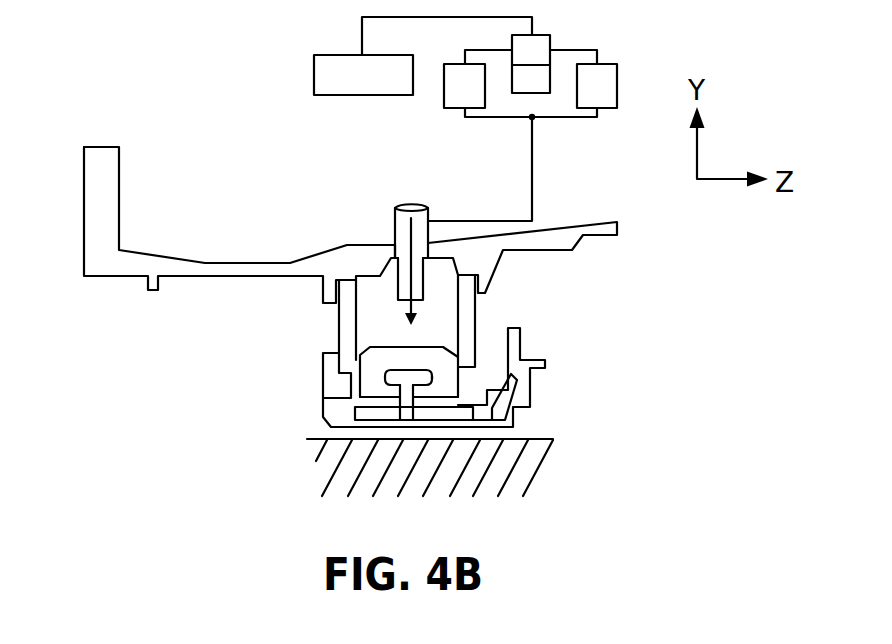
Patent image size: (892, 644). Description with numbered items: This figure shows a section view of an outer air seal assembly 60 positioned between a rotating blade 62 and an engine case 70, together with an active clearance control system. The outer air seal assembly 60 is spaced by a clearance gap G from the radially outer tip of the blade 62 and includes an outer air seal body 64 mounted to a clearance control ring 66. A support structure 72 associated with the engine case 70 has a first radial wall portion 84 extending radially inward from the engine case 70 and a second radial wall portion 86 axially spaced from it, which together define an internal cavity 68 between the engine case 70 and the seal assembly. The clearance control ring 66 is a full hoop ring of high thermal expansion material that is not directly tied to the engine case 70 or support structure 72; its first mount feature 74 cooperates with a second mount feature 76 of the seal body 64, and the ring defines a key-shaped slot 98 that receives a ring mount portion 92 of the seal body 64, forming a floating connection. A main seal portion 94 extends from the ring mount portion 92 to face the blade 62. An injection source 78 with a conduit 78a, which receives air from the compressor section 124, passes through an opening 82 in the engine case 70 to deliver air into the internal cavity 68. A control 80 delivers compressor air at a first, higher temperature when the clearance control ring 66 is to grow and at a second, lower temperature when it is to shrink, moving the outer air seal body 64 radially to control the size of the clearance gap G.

The compressor section 124 is at (423, 56).
The control 80 is at (548, 39).
The injection source 78 is at (417, 252).
The conduit 78a is at (395, 212).
The opening 82 is at (395, 243).
The engine case 70 is at (253, 263).
The second radial wall portion 86 is at (480, 279).
The outer air seal assembly 60 is at (429, 403).
The support structure 72 is at (356, 336).
The first radial wall portion 84 is at (346, 340).
The clearance control ring 66 is at (432, 436).
The first mount feature 74 is at (430, 360).
The slot 98 is at (432, 380).
The outer air seal body 64 is at (457, 379).
The internal cavity 68 is at (451, 325).
The main seal portion 94 is at (515, 422).
The clearance gap G is at (306, 428).
The blade 62 is at (335, 467).
The second mount feature 76 is at (388, 420).
The ring mount portion 92 is at (418, 400).